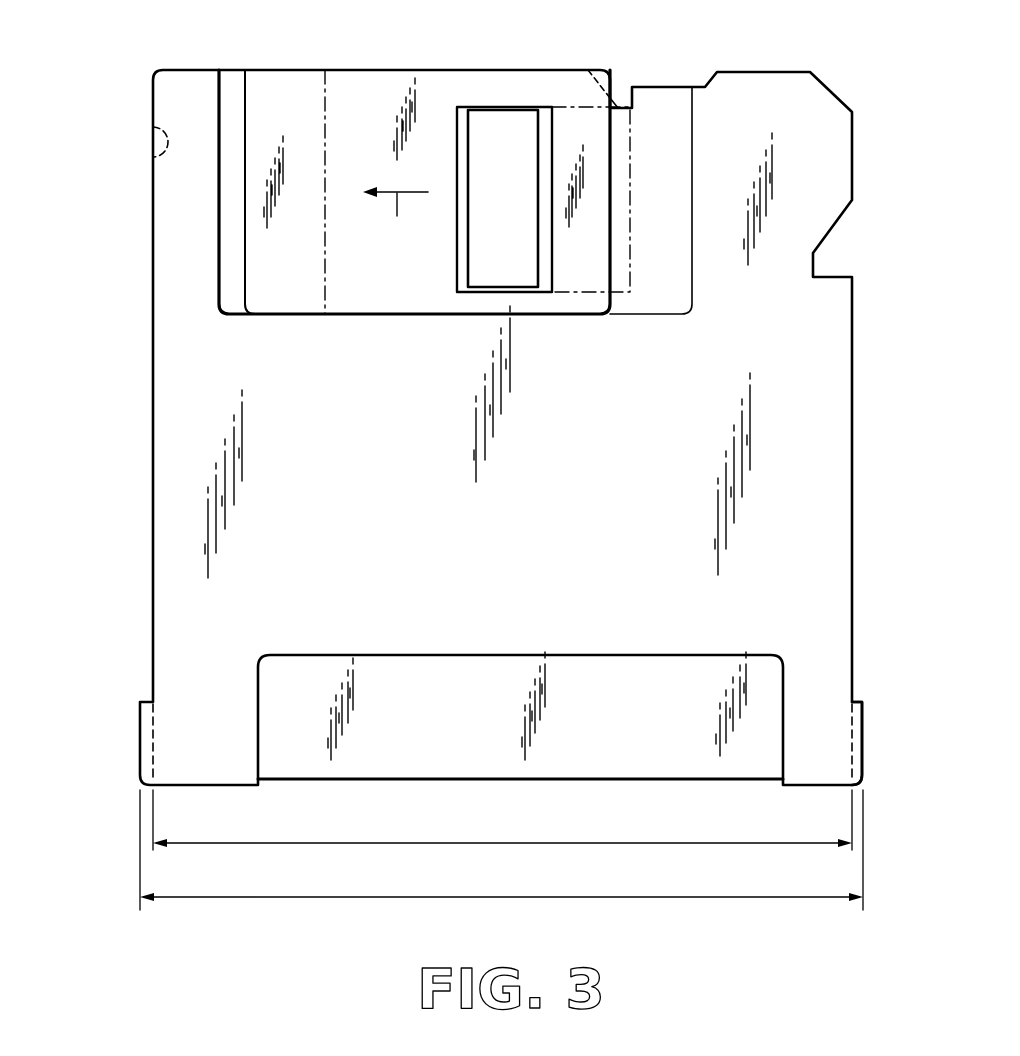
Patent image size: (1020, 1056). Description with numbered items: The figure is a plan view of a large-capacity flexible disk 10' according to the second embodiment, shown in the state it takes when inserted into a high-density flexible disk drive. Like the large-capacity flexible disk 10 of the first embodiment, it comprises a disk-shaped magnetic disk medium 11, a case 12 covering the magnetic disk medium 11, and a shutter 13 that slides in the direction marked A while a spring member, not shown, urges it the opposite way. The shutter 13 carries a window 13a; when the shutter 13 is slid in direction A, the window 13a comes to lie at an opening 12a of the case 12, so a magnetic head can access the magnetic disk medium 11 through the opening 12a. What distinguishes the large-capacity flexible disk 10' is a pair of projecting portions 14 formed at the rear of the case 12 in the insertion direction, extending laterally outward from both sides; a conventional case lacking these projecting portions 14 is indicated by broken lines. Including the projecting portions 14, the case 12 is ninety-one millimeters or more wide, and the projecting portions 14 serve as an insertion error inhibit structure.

The large-capacity flexible disk 10' is at (495, 471).
The large-capacity flexible disk 10 is at (495, 471).
The magnetic disk medium 11 is at (519, 233).
The case 12 is at (842, 508).
The opening 12a is at (537, 127).
The shutter 13 is at (413, 316).
The window 13a is at (543, 293).
The projecting portions 14 is at (862, 740).